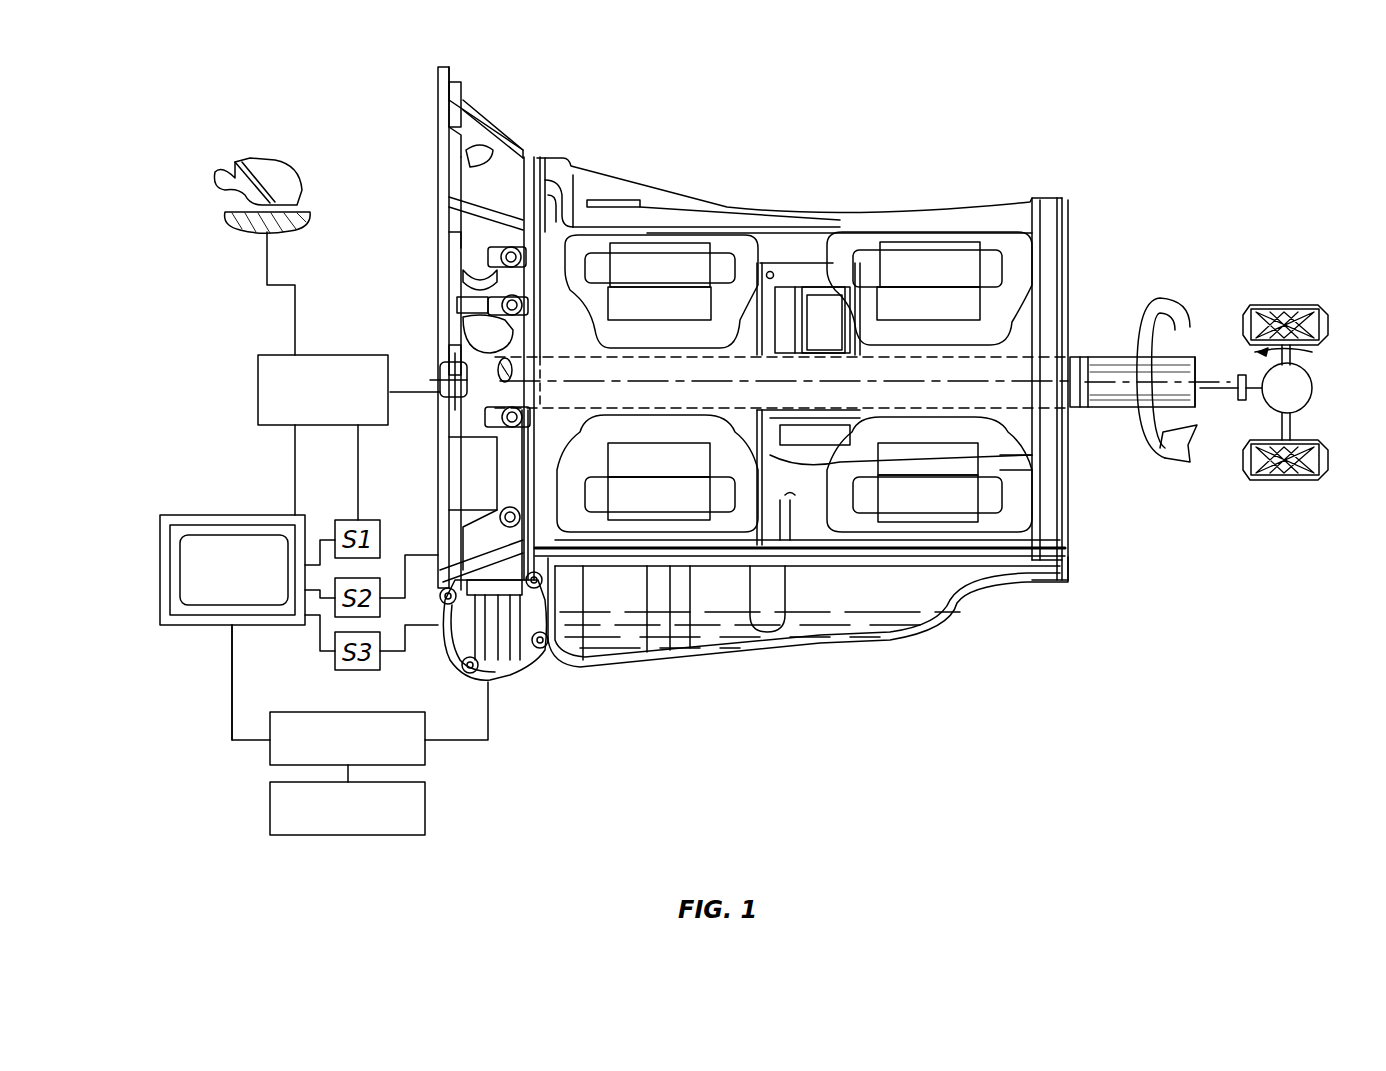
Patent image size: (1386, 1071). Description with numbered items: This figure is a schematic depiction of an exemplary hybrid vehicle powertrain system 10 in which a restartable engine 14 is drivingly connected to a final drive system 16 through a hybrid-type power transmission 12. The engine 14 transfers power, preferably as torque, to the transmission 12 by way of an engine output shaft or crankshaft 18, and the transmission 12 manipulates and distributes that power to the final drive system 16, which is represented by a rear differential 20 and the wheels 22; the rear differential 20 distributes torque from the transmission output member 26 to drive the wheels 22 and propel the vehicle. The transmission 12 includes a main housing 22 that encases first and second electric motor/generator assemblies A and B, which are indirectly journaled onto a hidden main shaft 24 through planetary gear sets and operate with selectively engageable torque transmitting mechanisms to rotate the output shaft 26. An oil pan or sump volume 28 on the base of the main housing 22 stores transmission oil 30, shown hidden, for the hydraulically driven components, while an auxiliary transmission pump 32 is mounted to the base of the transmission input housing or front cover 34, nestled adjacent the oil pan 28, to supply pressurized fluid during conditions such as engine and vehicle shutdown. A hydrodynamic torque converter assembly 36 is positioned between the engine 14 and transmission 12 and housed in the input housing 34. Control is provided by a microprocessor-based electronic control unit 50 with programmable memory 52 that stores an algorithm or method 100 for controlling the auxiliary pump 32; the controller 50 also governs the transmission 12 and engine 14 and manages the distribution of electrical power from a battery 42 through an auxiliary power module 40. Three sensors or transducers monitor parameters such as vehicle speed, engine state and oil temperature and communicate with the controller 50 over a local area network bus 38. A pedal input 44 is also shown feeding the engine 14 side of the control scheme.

The vehicle powertrain system 10 is at (937, 72).
The hybrid-type power transmission 12 is at (687, 148).
The restartable engine 14 is at (330, 352).
The final drive system 16 is at (1280, 265).
The engine output shaft or crankshaft 18 is at (388, 365).
The rear differential 20 is at (1255, 415).
The wheels / main housing 22 is at (952, 200).
The main shaft 24 is at (920, 360).
The transmission output member 26 is at (1105, 355).
The oil pan or sump volume 28 is at (675, 660).
The transmission oil 30 is at (720, 645).
The auxiliary transmission pump 32 is at (445, 660).
The transmission input housing 34 is at (488, 120).
The hydrodynamic torque converter assembly 36 is at (433, 206).
The local area network bus 38 is at (232, 668).
The auxiliary power module 40 is at (428, 752).
The battery 42 is at (270, 810).
The accelerator pedal 44 is at (283, 155).
The electronic control unit 50 is at (190, 515).
The programmable memory 52 is at (225, 525).
The algorithm or method 100 is at (250, 535).